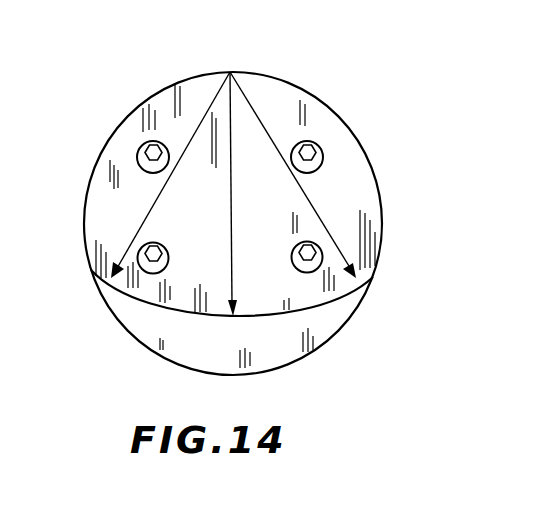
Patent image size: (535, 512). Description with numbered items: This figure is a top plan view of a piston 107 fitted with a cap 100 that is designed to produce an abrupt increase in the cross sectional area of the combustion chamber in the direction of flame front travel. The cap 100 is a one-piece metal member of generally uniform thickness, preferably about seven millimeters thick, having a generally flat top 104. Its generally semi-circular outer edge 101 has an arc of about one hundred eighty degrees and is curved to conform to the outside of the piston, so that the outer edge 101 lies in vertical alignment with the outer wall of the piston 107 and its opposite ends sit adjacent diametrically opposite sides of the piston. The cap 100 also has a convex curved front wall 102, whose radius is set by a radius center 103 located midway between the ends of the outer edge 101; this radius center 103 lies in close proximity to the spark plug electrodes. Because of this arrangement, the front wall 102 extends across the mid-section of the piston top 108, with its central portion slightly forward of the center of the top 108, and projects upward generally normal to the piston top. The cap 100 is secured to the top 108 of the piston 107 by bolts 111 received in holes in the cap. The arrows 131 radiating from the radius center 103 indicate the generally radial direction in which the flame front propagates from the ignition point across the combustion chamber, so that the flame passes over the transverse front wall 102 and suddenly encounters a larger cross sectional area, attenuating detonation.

The cap 100 is at (362, 113).
The outer edge 101 is at (150, 95).
The front wall 102 is at (350, 302).
The radius center 103 is at (230, 72).
The top 104 is at (288, 102).
The piston 107 is at (116, 317).
The top 108 is at (212, 353).
The bolts 111 is at (137, 157).
The arrows 131 is at (148, 212).